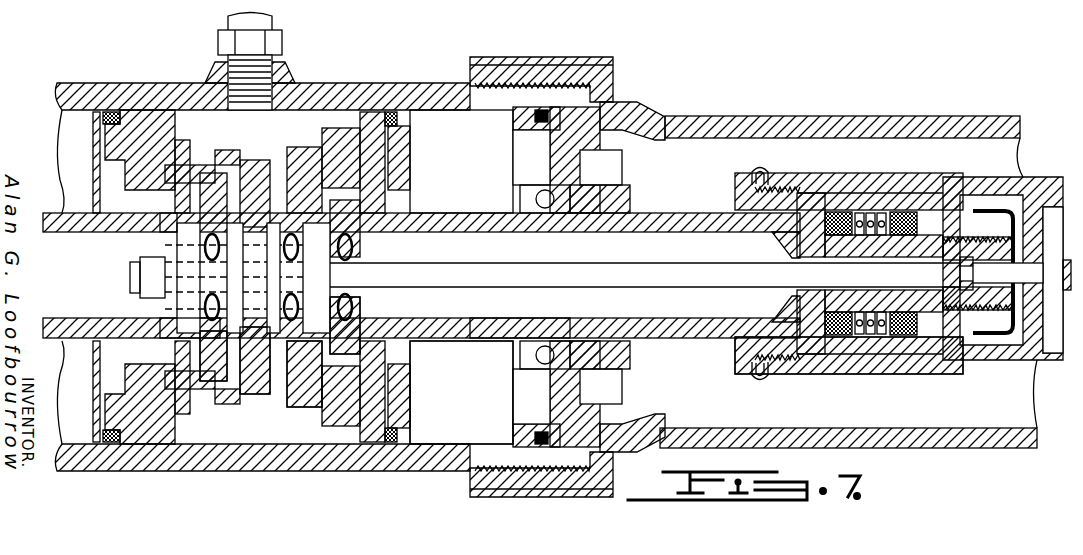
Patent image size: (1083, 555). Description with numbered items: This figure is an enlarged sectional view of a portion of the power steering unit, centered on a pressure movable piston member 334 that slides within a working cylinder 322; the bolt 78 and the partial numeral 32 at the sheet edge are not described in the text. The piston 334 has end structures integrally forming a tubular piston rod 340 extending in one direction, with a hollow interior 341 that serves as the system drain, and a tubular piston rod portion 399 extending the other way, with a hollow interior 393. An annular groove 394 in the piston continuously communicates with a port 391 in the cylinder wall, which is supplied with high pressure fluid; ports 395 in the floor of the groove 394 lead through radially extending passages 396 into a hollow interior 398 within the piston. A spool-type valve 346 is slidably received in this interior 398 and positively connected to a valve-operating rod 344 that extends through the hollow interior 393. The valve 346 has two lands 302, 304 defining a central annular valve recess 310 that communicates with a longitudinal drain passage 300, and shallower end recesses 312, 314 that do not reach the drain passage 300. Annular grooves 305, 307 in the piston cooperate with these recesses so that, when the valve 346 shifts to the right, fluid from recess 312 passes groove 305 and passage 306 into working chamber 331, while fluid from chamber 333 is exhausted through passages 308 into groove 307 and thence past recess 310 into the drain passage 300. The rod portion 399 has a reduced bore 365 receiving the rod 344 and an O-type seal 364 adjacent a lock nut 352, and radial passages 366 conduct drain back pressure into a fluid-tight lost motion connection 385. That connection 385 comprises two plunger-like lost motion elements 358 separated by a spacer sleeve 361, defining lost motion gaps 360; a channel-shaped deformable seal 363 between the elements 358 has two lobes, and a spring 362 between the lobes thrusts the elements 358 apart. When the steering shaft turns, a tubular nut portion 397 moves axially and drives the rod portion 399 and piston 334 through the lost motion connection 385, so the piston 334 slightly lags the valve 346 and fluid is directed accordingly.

The partial numeral 32 is at (13, 8).
The bolt 78 is at (268, 30).
The pressure movable piston member 334 is at (165, 124).
The port 391 is at (350, 110).
The annular recess or groove 394 is at (375, 110).
The working cylinder 322 is at (450, 110).
The passage 306 is at (180, 160).
The ports 395 is at (218, 150).
The passages 308 is at (316, 195).
The annular groove 307 is at (278, 195).
The radially extending passages 396 is at (262, 212).
The working chamber 331 is at (80, 176).
The tubular piston rod 340 is at (67, 207).
The annular groove 305 is at (333, 228).
The hollow interior 398 is at (185, 234).
The drain passage 300 is at (160, 262).
The hollow interior 341 is at (65, 236).
The annular valve recess 310 is at (263, 313).
The annular recess 312 is at (200, 320).
The annular recess 314 is at (330, 311).
The spool-type valve 346 is at (365, 318).
The valve-operating rod 344 is at (648, 263).
The hollow interior 393 is at (508, 318).
The chamber 333 is at (432, 396).
The tubular piston rod portion 399 is at (490, 213).
The land 302 is at (207, 395).
The land 304 is at (272, 395).
The lost motion elements 358 is at (918, 207).
The lost motion connection 385 is at (947, 163).
The spring 362 is at (870, 212).
The lost motion gap 360 is at (920, 207).
The tubular nut portion 397 is at (1010, 172).
The lock nut 352 is at (1057, 250).
The spacer sleeve 361 is at (797, 250).
The radial passages 366 is at (856, 257).
The bore 365 is at (862, 257).
The O-type seal 364 is at (960, 268).
The channel-shaped deformable seal 363 is at (872, 374).